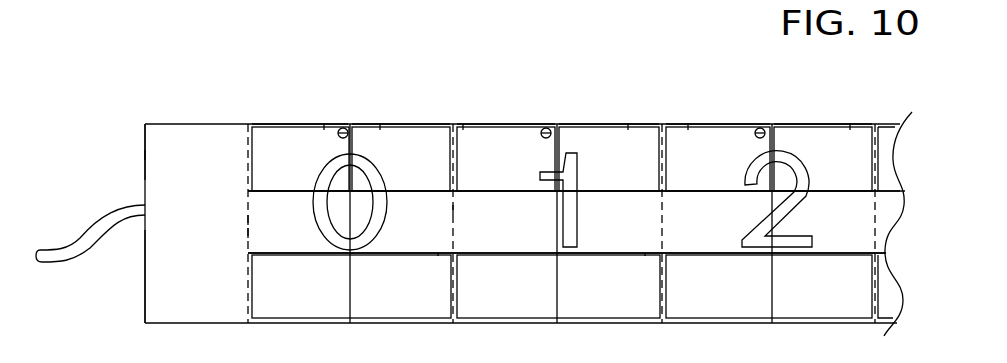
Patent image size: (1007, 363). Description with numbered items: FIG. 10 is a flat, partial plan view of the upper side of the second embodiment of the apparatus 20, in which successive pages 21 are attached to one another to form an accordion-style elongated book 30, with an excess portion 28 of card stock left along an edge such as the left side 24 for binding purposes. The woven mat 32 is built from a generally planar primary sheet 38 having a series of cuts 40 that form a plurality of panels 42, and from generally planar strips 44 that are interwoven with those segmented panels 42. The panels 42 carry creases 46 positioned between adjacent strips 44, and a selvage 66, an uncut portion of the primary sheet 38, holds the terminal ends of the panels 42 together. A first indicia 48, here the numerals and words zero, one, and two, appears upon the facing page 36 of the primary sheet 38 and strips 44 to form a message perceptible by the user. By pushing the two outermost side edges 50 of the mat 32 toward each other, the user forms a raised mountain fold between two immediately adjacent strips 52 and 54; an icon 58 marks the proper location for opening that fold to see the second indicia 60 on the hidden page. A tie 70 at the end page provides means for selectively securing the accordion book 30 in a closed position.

The apparatus 20 is at (578, 72).
The pages 21 is at (288, 124).
The woven mat 32 is at (532, 87).
The left side 24 is at (153, 243).
The excess portion 28 is at (152, 142).
The accordion-style elongated book 30 is at (183, 124).
The facing page 36 is at (324, 124).
The primary sheet 38 is at (250, 221).
The cuts 40 is at (255, 191).
The panels 42 is at (348, 237).
The strips 44 is at (262, 124).
The creases 46 is at (256, 150).
The first indicia 48 is at (316, 210).
The outermost side edges 50 is at (245, 233).
The strip 52 is at (255, 302).
The strip 54 is at (438, 250).
The icon 58 is at (338, 124).
The second indicia 60 is at (500, 85).
The selvage 66 is at (156, 164).
The ties 70 is at (82, 243).